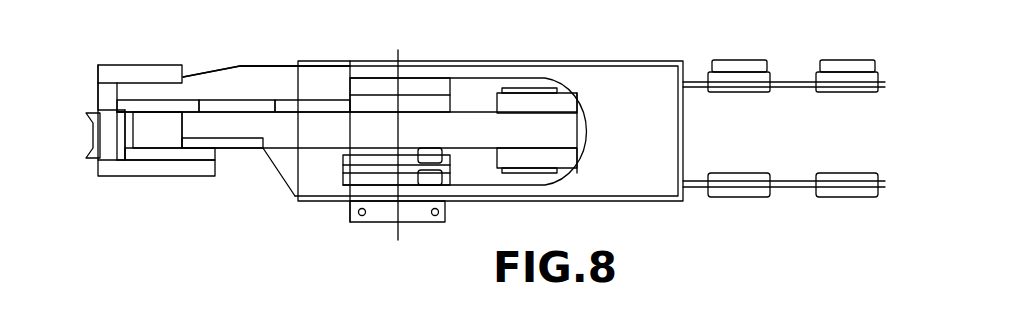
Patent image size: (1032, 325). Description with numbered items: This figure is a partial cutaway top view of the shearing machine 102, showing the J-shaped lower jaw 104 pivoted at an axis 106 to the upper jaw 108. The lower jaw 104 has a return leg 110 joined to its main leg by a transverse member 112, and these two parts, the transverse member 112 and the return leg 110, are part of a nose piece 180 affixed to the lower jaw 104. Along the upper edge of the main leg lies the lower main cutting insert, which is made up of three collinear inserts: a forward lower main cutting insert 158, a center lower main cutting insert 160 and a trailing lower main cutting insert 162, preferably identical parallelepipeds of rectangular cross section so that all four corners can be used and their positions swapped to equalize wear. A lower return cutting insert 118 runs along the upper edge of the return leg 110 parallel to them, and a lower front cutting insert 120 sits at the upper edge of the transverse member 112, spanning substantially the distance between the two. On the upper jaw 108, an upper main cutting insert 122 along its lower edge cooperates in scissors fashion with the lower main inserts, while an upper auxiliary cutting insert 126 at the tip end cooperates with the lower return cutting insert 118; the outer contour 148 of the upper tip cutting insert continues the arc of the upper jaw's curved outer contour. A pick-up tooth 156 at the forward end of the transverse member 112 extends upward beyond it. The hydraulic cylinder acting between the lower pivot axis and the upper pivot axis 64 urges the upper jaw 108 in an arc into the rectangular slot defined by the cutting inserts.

The shearing machine 102 is at (660, 36).
The lower jaw 104 is at (276, 62).
The axis 106 is at (398, 240).
The upper jaw 108 is at (380, 128).
The return leg 110 is at (113, 178).
The transverse member 112 is at (98, 97).
The lower return cutting insert 118 is at (185, 152).
The lower front cutting insert 120 is at (128, 117).
The upper main cutting insert 122 is at (252, 102).
The upper auxiliary cutting insert 126 is at (237, 150).
The outer contour 148 is at (152, 142).
The pick-up tooth 156 is at (82, 143).
The forward lower main cutting insert 158 is at (170, 105).
The center lower main cutting insert 160 is at (252, 103).
The trailing lower main cutting insert 162 is at (333, 103).
The upper pivot axis 64 is at (522, 97).
The nose piece 180 is at (131, 191).